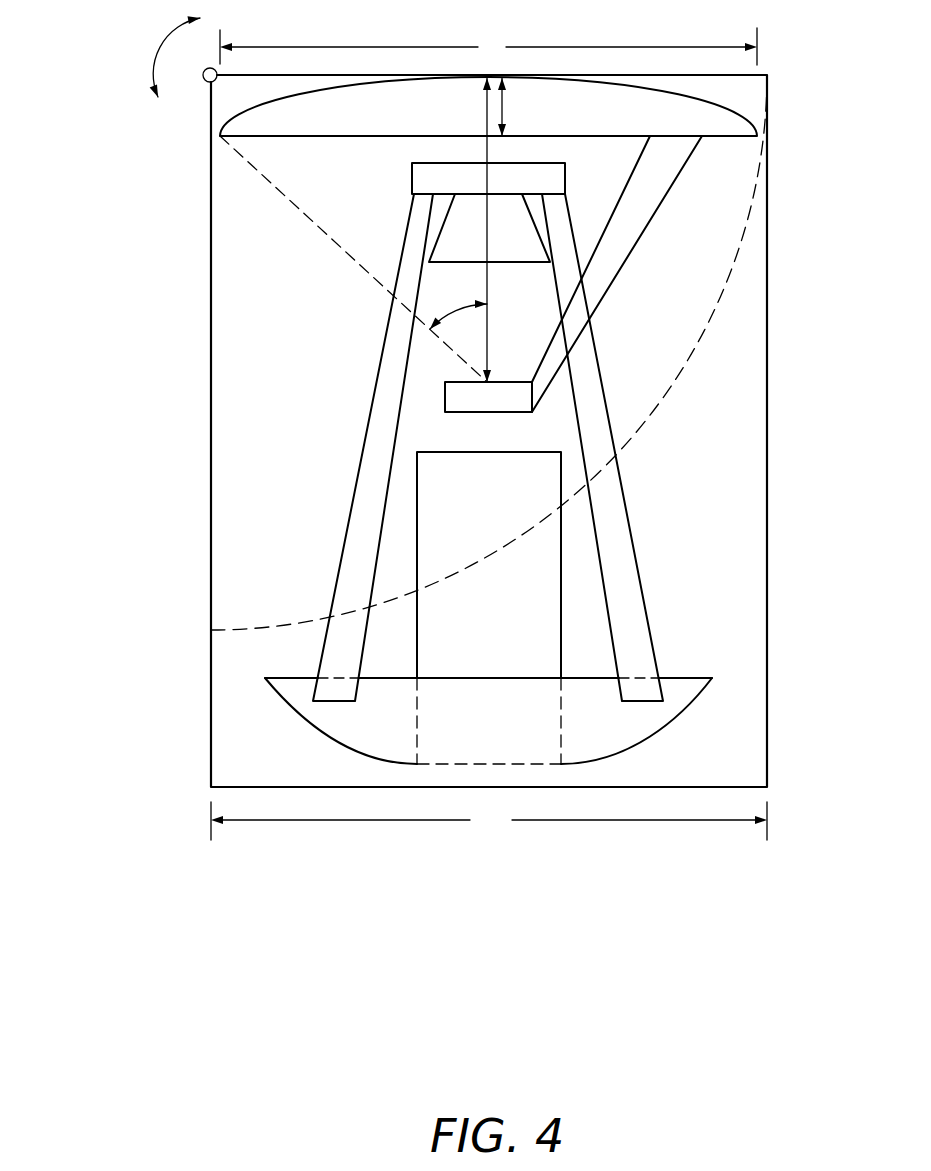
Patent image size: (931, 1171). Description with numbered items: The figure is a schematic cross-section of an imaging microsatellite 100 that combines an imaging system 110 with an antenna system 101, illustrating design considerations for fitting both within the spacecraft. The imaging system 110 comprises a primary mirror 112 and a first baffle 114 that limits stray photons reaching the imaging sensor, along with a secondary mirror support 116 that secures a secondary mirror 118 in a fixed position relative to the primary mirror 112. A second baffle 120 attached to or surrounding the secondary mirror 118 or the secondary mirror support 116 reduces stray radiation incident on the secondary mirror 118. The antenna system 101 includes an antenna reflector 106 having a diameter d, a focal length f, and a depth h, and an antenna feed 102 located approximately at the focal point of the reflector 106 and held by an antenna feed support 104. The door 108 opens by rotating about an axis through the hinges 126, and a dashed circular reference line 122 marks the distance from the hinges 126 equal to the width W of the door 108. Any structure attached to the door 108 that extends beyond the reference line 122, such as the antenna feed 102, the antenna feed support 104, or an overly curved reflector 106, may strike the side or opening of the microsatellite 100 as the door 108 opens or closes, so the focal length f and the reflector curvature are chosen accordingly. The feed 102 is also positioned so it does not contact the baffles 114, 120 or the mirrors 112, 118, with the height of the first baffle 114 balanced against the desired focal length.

The imaging microsatellite 100 is at (136, 379).
The antenna system 101 is at (605, 245).
The antenna feed 102 is at (513, 405).
The antenna feed support 104 is at (612, 260).
The antenna reflector 106 is at (712, 125).
The door 108 is at (764, 74).
The imaging system 110 is at (454, 447).
The primary mirror 112 is at (330, 723).
The first baffle 114 is at (430, 640).
The secondary mirror support 116 is at (368, 497).
The secondary mirror 118 is at (468, 193).
The second baffle 120 is at (463, 224).
The reference line 122 is at (665, 395).
The hinges 126 is at (206, 83).